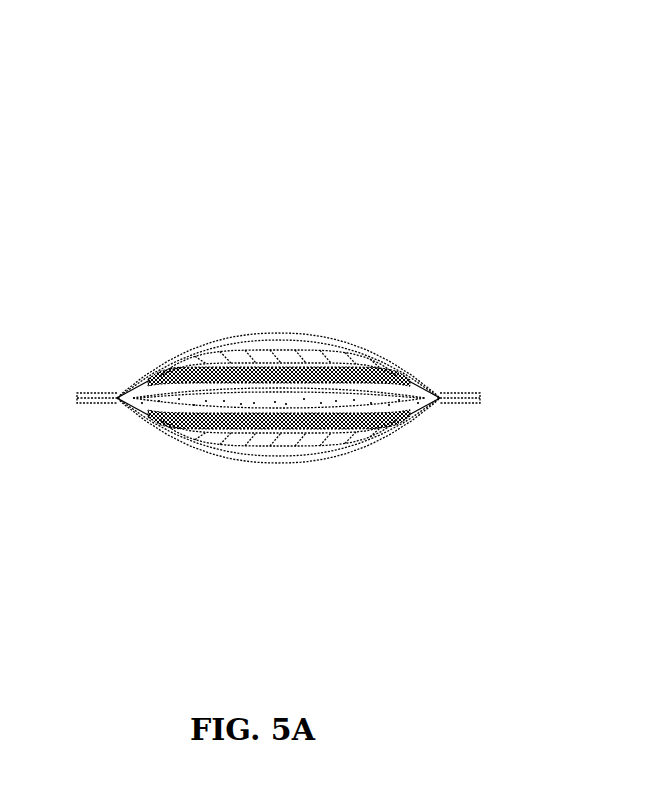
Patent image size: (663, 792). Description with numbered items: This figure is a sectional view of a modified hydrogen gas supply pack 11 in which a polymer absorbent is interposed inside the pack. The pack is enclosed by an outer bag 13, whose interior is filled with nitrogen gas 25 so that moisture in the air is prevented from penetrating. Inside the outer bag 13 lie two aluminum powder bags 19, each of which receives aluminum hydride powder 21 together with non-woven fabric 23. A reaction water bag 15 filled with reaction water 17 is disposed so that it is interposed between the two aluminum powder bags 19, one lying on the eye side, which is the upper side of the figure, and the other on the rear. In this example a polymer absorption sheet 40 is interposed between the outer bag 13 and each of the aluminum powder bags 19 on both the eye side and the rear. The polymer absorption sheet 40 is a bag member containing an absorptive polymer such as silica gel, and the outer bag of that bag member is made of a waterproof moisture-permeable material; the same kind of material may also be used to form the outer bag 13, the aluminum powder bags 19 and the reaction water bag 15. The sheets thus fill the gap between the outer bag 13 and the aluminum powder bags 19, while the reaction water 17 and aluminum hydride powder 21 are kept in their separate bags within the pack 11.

The hydrogen gas supply pack 11 is at (230, 211).
The outer bag 13 is at (88, 403).
The reaction water bag 15 is at (152, 405).
The reaction water 17 is at (441, 405).
The aluminum powder bag 19 is at (132, 385).
The aluminum hydride powder 21 is at (305, 362).
The non-woven fabric 23 is at (272, 345).
The nitrogen gas 25 is at (200, 350).
The polymer absorption sheet 40 is at (408, 370).